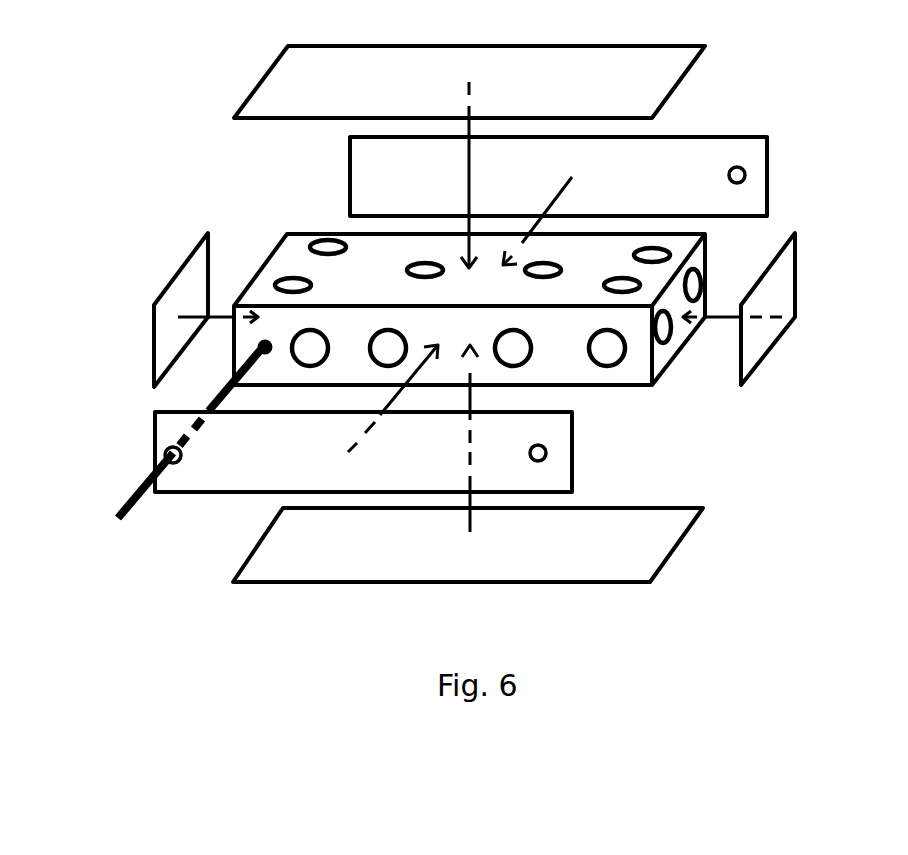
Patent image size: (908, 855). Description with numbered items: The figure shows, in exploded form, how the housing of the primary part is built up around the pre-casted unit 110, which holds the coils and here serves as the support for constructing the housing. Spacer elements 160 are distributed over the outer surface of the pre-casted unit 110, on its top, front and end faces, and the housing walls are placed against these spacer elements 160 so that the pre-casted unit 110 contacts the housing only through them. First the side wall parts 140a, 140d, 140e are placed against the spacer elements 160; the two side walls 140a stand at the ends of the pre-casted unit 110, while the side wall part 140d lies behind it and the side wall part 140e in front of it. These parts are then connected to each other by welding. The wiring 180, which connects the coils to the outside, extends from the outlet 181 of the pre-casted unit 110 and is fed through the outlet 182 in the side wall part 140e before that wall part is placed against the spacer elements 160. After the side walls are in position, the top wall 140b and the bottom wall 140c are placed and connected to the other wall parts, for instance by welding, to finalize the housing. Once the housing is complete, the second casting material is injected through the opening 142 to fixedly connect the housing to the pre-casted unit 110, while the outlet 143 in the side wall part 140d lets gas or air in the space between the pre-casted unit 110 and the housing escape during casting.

The pre-casted unit 110 is at (662, 382).
The side walls 140a is at (172, 275).
The top wall 140b is at (270, 67).
The bottom wall 140c is at (687, 543).
The side wall part 140d is at (733, 133).
The side wall part 140e is at (575, 452).
The inlet 142 is at (547, 460).
The outlet 143 is at (745, 180).
The spacer elements 160 is at (370, 330).
The wiring 180 is at (127, 510).
The outlet 181 is at (262, 345).
The outlet 182 is at (162, 457).